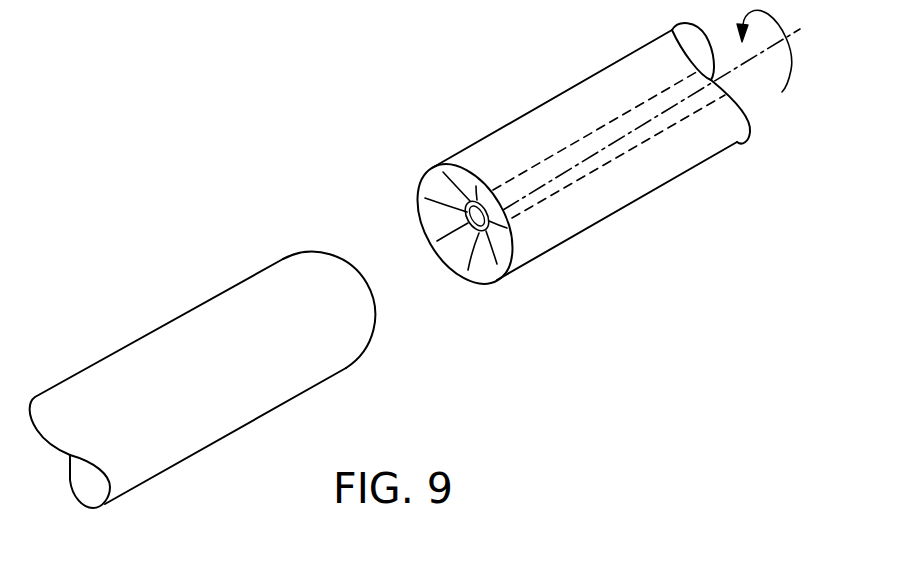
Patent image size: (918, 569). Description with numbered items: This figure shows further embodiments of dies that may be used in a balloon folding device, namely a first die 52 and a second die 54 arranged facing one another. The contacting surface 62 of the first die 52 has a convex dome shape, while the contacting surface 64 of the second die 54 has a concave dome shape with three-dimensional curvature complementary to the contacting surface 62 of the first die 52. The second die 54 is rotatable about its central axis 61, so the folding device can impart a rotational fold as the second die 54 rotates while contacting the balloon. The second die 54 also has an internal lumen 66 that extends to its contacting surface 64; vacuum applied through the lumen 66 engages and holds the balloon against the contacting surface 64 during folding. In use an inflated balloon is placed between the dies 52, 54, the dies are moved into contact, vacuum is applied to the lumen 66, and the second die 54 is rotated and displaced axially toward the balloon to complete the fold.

The first die 52 is at (173, 318).
The second die 54 is at (600, 72).
The central axis 61 is at (645, 122).
The contacting surface 62 is at (312, 249).
The contacting surface 64 is at (432, 228).
The internal lumen 66 is at (586, 167).